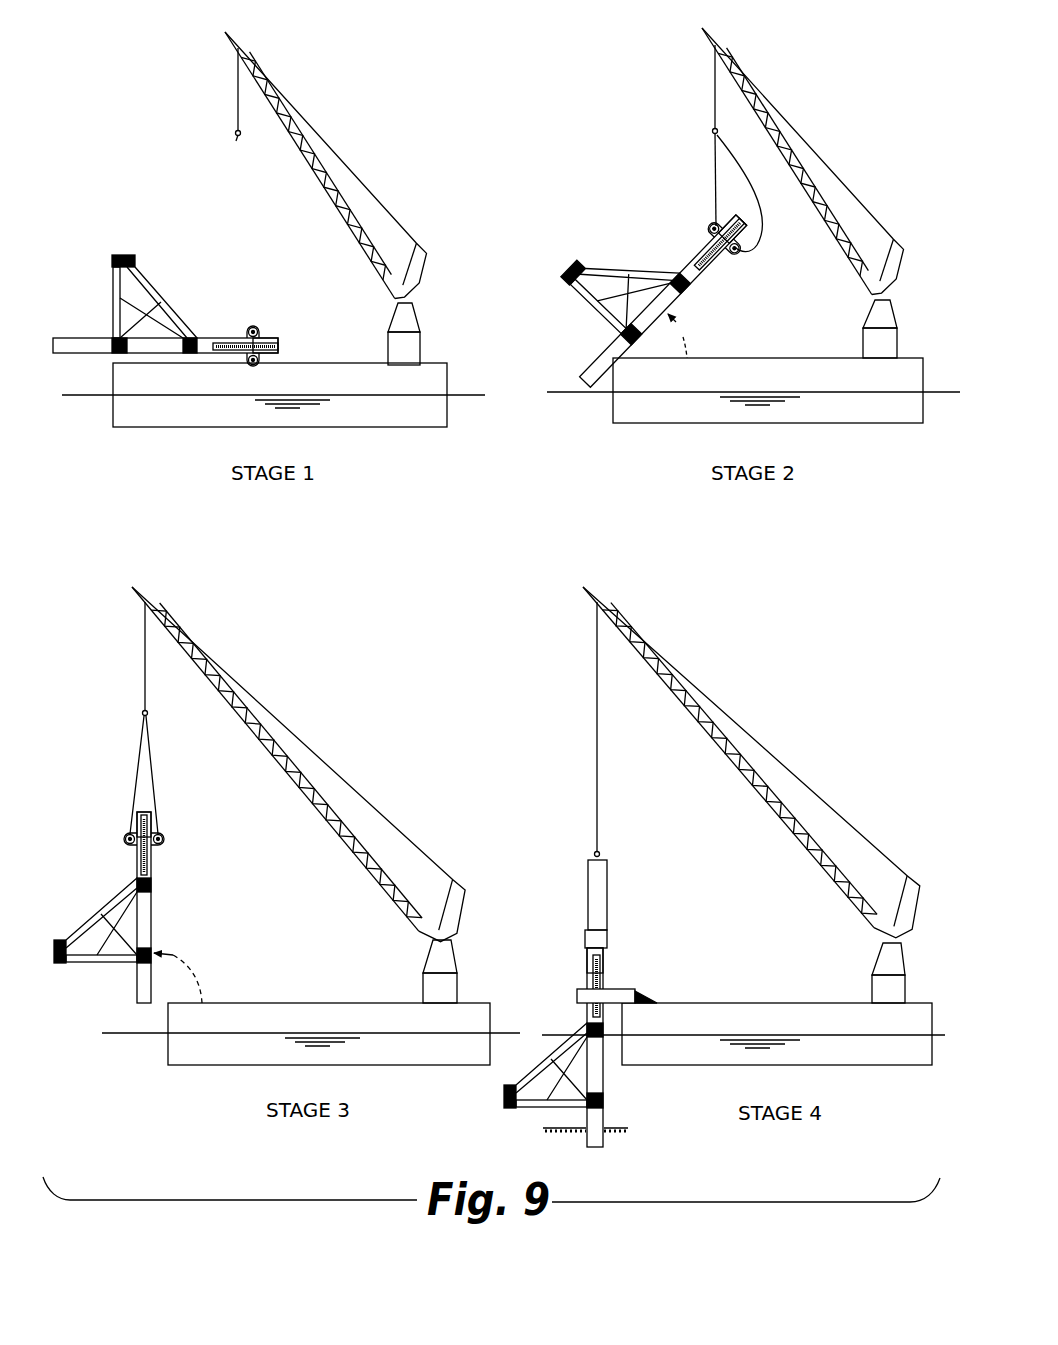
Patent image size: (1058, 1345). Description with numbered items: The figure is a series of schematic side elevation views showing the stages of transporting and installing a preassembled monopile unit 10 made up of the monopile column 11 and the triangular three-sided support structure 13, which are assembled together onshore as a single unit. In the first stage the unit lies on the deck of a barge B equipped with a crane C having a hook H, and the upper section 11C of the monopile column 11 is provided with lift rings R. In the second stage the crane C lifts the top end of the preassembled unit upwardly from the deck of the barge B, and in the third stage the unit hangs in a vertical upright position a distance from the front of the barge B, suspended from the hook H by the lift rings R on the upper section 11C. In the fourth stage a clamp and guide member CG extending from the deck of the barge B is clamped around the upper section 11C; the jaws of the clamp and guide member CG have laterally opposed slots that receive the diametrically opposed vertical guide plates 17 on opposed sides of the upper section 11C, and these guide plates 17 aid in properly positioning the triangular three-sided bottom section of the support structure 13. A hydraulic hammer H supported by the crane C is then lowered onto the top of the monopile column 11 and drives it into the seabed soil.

The pile installation assembly 10 is at (402, 680).
The monopile column 11 is at (92, 357).
The upper section 11C is at (280, 346).
The triangular three-sided support structure 13 is at (168, 292).
The vertical guide plates 17 is at (227, 340).
The lift rings R is at (258, 331).
The hook H is at (237, 136).
The crane C is at (313, 181).
The barge B is at (176, 411).
The clamp and guide member CG is at (623, 993).